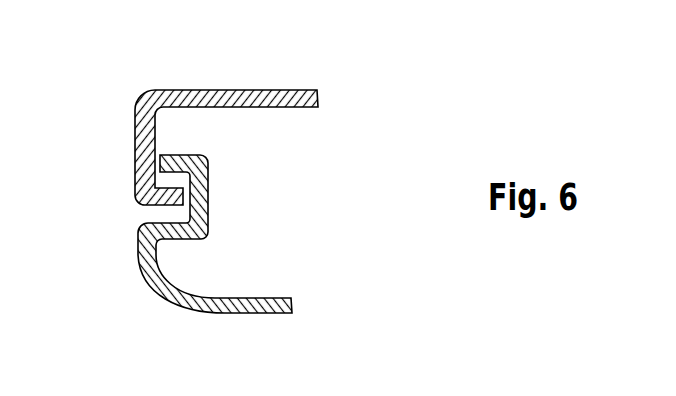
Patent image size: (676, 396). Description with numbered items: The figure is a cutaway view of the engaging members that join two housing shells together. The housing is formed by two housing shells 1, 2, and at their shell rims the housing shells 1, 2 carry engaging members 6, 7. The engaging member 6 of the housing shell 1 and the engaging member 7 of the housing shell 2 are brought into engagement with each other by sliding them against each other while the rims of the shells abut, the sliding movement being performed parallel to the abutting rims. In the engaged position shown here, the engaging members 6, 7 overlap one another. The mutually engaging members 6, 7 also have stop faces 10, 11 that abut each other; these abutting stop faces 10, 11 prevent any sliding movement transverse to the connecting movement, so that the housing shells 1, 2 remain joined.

The housing shell 1 is at (292, 88).
The housing shell 2 is at (257, 314).
The engaging member 6 is at (168, 193).
The engaging member 7 is at (208, 192).
The stop face 10 is at (157, 157).
The stop face 11 is at (147, 166).